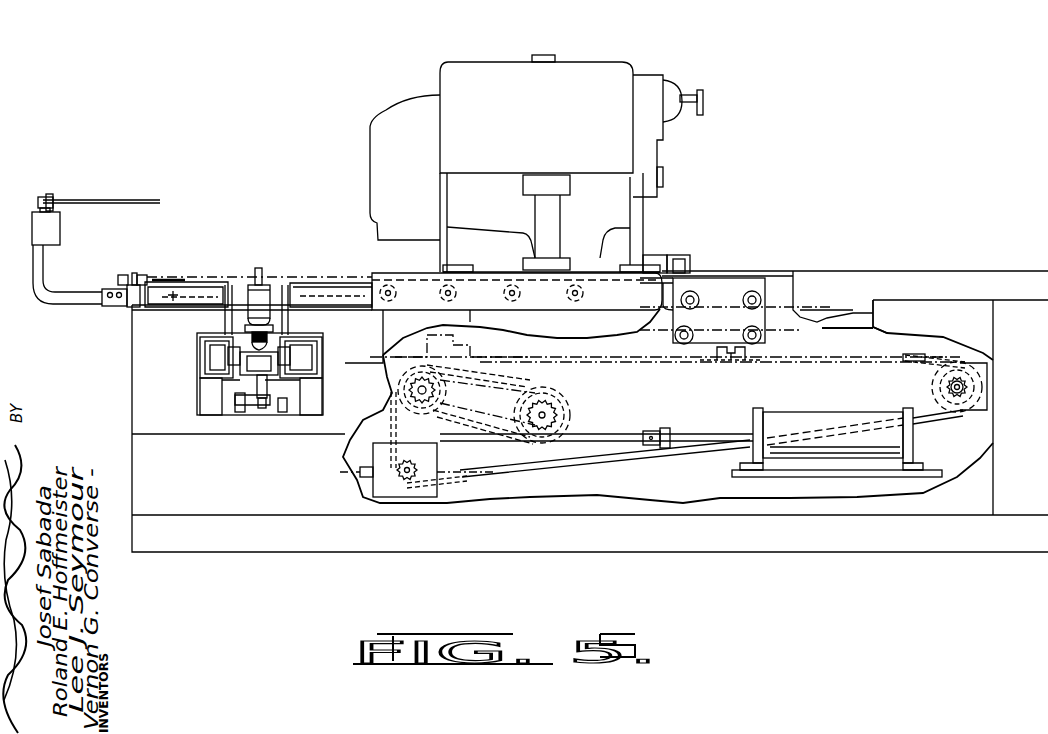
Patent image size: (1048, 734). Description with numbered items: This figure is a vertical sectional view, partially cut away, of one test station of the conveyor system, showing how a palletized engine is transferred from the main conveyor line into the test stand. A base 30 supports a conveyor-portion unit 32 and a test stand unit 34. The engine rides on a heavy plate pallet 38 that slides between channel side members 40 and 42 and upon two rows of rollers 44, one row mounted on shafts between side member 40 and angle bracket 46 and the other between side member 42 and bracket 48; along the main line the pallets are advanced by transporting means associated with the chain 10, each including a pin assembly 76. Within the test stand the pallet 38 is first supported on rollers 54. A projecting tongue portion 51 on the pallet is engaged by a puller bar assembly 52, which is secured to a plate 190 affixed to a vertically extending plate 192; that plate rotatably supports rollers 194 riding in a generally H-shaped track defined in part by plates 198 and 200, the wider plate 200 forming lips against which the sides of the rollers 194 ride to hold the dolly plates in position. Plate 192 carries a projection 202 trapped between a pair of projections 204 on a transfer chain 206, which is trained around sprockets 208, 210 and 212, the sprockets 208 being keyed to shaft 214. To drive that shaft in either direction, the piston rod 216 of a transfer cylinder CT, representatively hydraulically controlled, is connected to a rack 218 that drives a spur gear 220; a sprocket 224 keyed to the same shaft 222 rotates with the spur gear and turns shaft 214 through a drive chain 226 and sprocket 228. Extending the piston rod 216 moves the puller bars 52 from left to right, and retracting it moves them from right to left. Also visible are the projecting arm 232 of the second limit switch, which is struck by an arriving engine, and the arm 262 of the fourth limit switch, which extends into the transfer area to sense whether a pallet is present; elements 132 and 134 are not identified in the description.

The chain 10 is at (288, 329).
The base 30 is at (270, 543).
The conveyor-portion unit 32 is at (110, 400).
The test stand unit 34 is at (954, 232).
The pallet 38 is at (600, 283).
The channel side member 40 is at (140, 312).
The channel side member 42 is at (383, 323).
The rollers 44 is at (172, 310).
The angle bracket 46 is at (300, 307).
The bracket 48 is at (241, 317).
The tongue portion 51 is at (667, 258).
The puller bar assembly 52 is at (690, 263).
The rollers 54 is at (520, 308).
The pin assembly 76 is at (178, 297).
The control box 132 is at (47, 228).
The conduit 134 is at (108, 285).
The plate 190 is at (700, 270).
The vertically extending plate 192 is at (747, 280).
The rollers 194 is at (743, 312).
The plate 198 is at (833, 312).
The plate 200 is at (863, 322).
The projection 202 is at (750, 346).
The projections 204 is at (738, 362).
The transfer chain 206 is at (720, 361).
The sprockets 208 is at (457, 360).
The sprocket 210 is at (423, 468).
The sprocket 212 is at (940, 378).
The shaft 214 is at (410, 393).
The piston rod 216 is at (700, 438).
The rack 218 is at (556, 445).
The spur gear 220 is at (572, 425).
The shaft 222 is at (559, 416).
The sprocket 224 is at (560, 405).
The drive chain 226 is at (517, 387).
The sprocket 228 is at (401, 391).
The projecting arm 232 is at (160, 185).
The arm 262 is at (160, 273).
The transfer cylinder CT is at (860, 397).